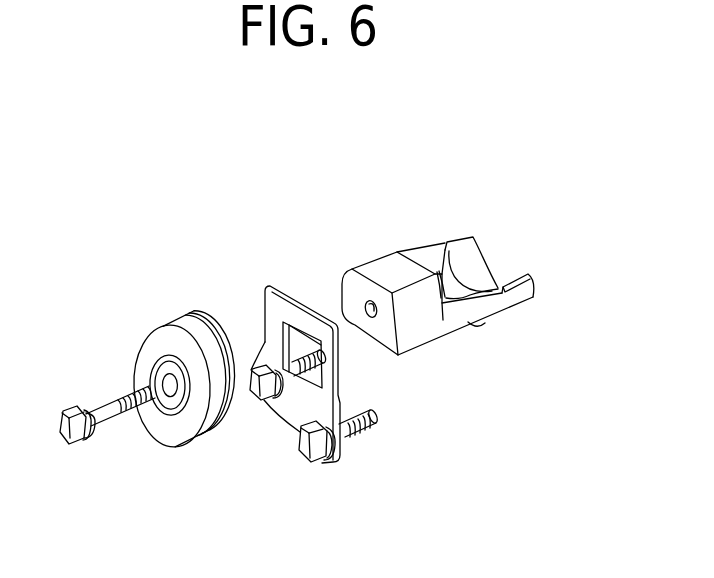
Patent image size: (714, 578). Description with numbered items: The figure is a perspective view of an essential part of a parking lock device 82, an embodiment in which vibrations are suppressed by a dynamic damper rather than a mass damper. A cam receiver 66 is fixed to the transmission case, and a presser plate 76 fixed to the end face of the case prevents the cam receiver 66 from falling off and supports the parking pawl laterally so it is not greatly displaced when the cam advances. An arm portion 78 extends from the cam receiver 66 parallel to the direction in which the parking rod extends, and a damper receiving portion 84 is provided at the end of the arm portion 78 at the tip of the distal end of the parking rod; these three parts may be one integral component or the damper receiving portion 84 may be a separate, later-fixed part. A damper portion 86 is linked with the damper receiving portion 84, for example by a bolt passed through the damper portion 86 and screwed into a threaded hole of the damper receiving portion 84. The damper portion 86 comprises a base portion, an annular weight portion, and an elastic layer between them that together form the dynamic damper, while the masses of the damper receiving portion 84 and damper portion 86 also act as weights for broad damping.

The parking lock device 82 is at (392, 178).
The damper receiving portion 84 is at (383, 267).
The presser plate 76 is at (270, 298).
The arm portion 78 is at (462, 328).
The cam receiver 66 is at (503, 312).
The damper portion 86 is at (209, 447).